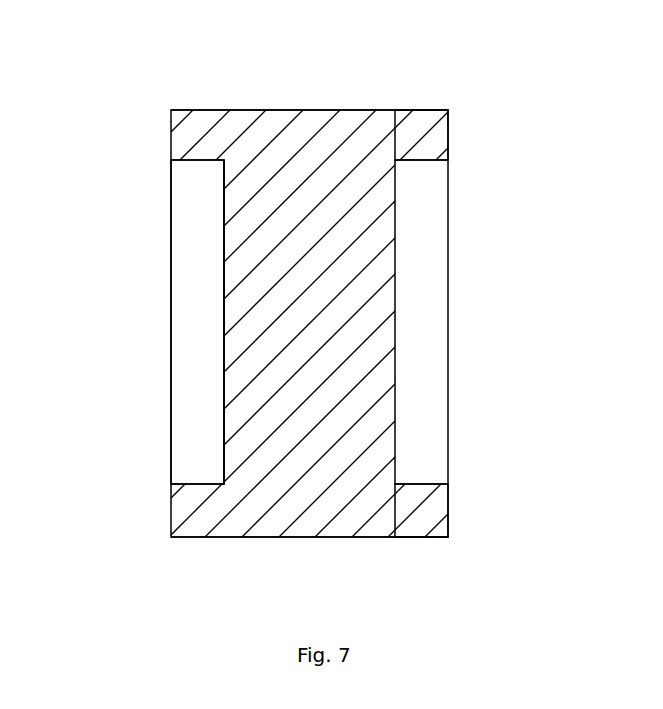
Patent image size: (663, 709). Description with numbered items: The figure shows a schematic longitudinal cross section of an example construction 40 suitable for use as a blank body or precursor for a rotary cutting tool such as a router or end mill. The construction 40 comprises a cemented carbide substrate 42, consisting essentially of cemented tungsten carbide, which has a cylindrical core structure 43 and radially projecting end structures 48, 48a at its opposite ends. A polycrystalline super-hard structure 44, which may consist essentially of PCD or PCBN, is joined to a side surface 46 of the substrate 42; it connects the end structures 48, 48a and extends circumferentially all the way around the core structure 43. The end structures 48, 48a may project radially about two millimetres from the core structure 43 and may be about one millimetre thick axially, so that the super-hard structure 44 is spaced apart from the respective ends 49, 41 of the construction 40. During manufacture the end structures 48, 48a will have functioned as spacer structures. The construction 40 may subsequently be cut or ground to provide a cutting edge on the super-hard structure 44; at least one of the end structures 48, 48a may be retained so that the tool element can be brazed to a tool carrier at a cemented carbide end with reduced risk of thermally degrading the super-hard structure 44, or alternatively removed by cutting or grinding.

The construction 40 is at (331, 354).
The end of the construction 41 is at (306, 110).
The cemented carbide substrate 42 is at (360, 192).
The cylindrical core structure 43 is at (340, 322).
The super-hard structure 44 is at (187, 218).
The side surface 46 is at (222, 322).
The end structure 48 is at (442, 507).
The end structure 48a is at (448, 135).
The end of the construction 49 is at (308, 537).